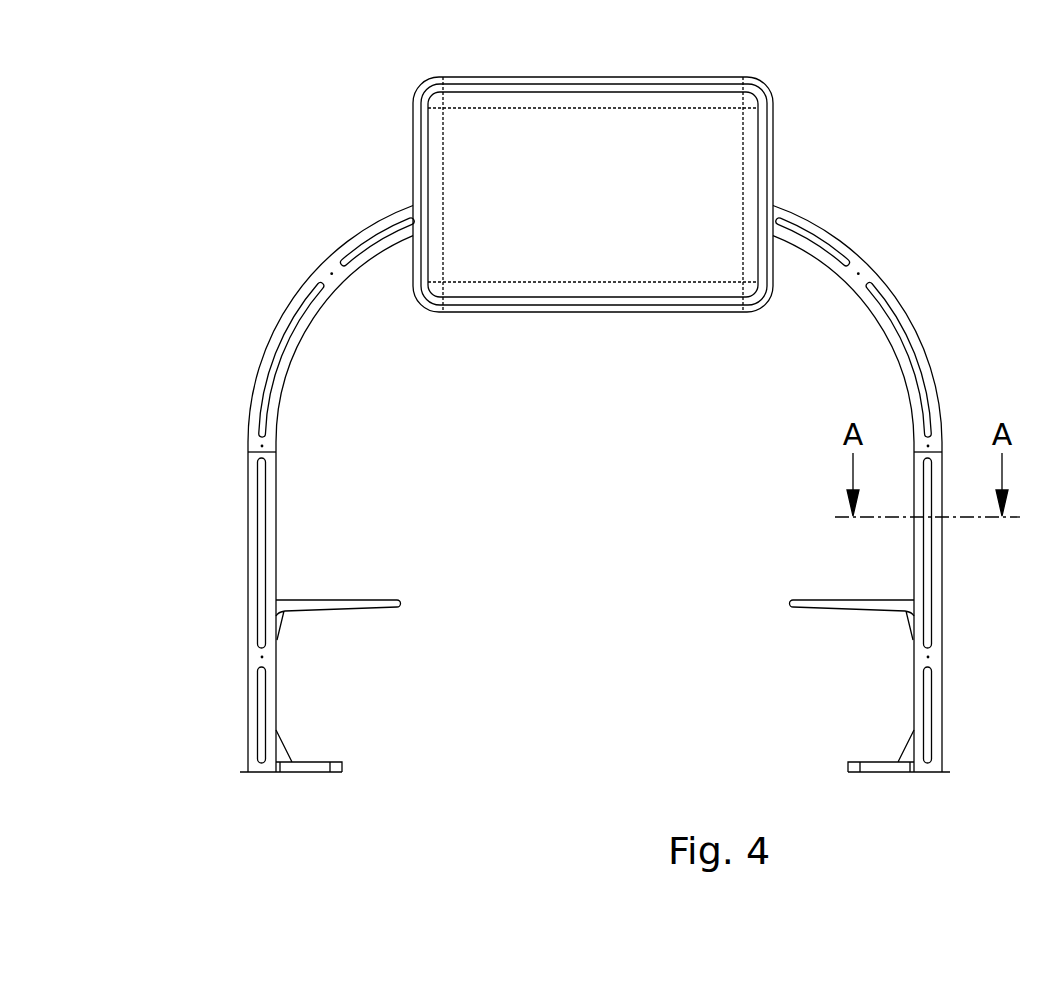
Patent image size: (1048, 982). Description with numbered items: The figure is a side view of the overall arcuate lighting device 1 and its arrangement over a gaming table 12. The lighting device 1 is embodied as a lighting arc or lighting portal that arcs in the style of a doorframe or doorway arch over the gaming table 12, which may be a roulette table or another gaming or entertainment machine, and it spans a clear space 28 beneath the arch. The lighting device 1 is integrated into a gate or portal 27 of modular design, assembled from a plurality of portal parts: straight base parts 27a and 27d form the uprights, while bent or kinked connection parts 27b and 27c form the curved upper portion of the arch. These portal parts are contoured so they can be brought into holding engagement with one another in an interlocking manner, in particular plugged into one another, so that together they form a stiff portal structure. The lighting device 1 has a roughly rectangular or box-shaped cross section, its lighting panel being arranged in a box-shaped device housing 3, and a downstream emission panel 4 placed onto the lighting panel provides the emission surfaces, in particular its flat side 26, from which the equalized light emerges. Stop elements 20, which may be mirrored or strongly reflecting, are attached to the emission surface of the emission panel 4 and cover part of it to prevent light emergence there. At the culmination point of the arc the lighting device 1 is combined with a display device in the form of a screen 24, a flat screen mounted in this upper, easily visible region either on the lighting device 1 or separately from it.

The lighting device 1 is at (881, 203).
The device housing 3 is at (843, 283).
The emission panel 4 is at (924, 338).
The gaming table 12 is at (334, 576).
The stop elements 20 is at (288, 321).
The screen 24 is at (727, 146).
The flat side of the emission panel 26 is at (260, 505).
The portal 27 is at (888, 249).
The straight base part 27a is at (252, 665).
The bent connection part 27b is at (347, 248).
The bent connection part 27c is at (812, 225).
The straight base part 27d is at (940, 622).
The clear space 28 is at (590, 443).